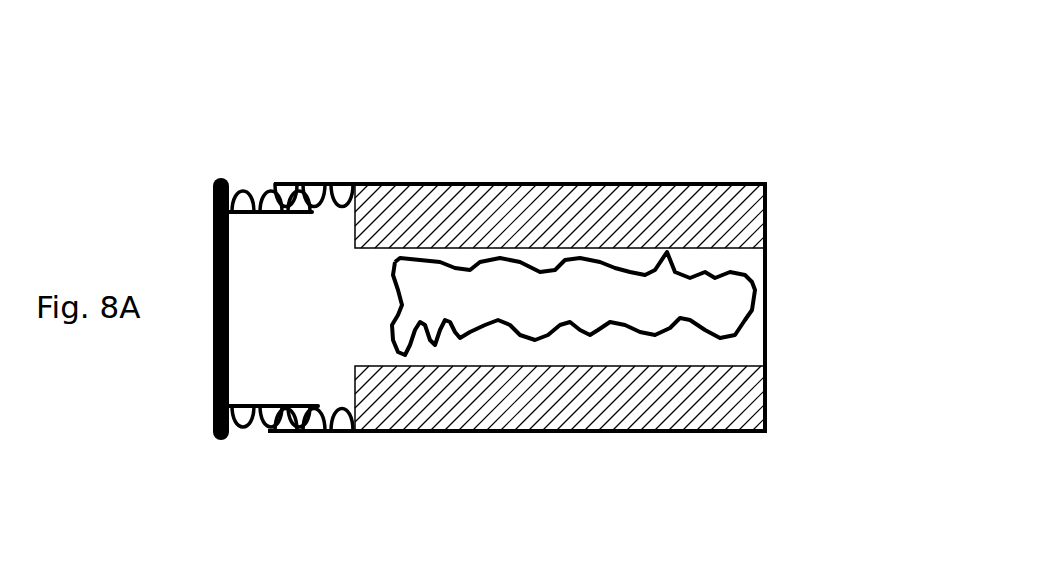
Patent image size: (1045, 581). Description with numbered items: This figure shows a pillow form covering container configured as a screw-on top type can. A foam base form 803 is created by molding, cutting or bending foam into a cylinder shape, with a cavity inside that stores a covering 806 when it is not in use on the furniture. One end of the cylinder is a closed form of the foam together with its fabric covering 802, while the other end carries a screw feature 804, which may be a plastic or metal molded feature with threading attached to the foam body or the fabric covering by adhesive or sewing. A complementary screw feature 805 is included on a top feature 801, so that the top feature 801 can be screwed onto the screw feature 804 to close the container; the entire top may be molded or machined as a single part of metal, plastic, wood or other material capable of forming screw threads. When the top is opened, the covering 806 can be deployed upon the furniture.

The top feature 801 is at (133, 365).
The fabric covering 802 is at (516, 217).
The foam base form 803 is at (647, 333).
The screw feature 804 is at (400, 354).
The complementary screw feature 805 is at (299, 371).
The covering 806 is at (468, 196).